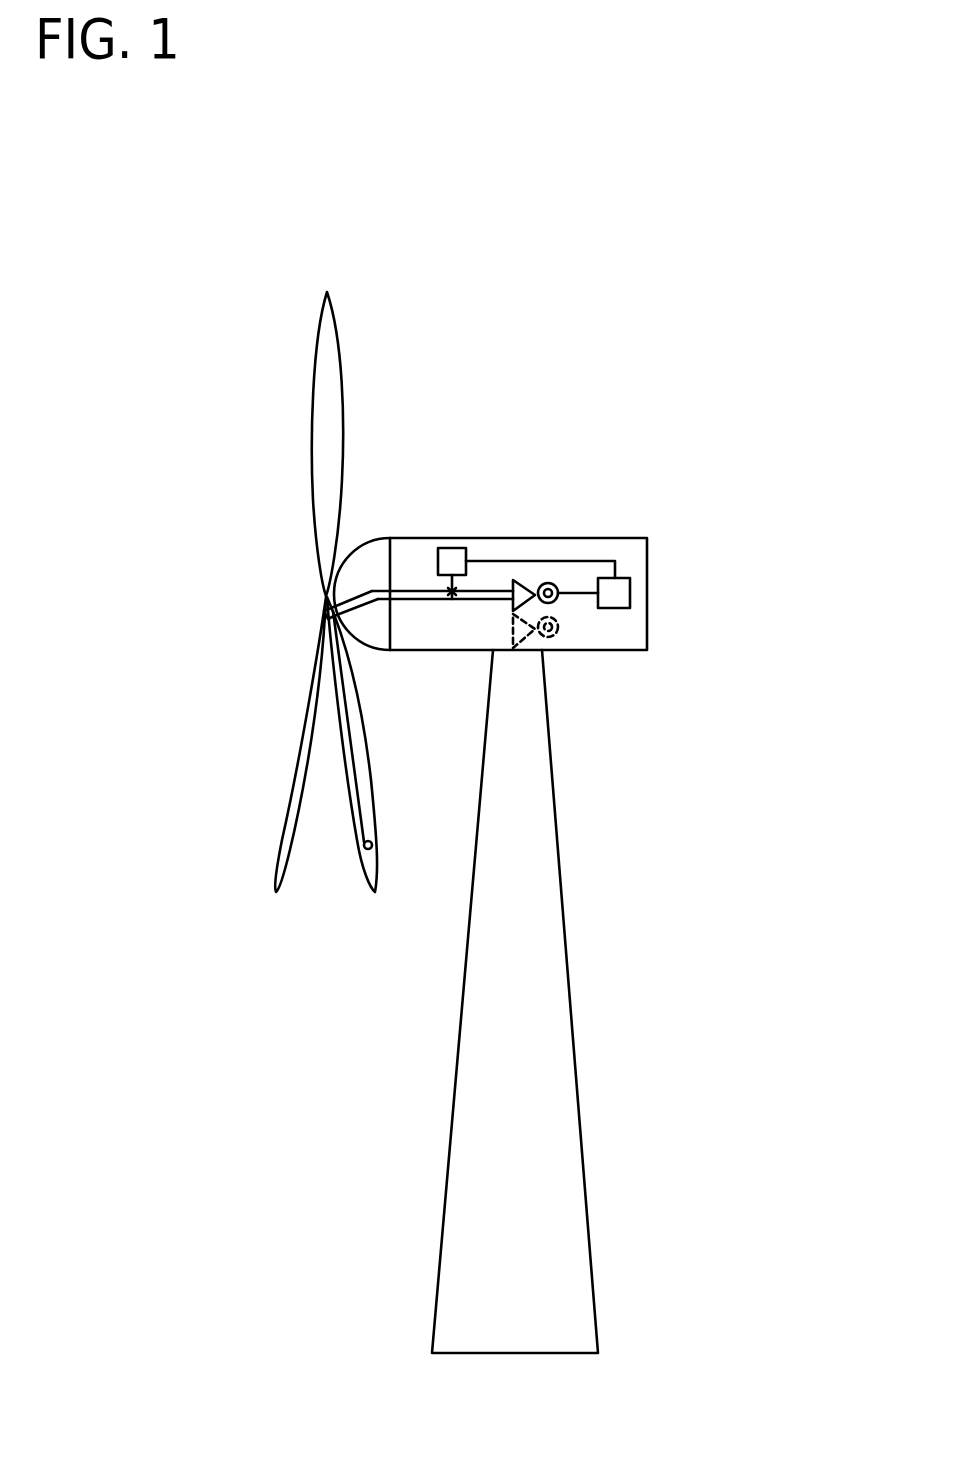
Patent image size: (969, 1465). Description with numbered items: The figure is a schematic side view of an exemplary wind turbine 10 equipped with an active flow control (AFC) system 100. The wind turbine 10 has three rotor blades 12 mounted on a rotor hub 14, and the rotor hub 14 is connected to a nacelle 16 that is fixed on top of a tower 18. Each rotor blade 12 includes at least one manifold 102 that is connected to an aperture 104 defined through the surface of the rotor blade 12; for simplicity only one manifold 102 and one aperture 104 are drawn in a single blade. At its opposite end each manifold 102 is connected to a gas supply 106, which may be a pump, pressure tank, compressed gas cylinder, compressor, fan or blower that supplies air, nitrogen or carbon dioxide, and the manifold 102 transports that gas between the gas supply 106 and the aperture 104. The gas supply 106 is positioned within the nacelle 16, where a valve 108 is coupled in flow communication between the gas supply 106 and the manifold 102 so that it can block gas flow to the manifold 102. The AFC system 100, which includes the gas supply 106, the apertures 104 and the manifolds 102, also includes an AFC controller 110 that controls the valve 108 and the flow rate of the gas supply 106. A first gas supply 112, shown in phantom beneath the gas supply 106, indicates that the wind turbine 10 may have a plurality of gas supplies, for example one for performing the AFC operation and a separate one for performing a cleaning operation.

The wind turbine 10 is at (650, 352).
The rotor blade 12 is at (310, 477).
The rotor hub 14 is at (366, 538).
The nacelle 16 is at (647, 595).
The tower 18 is at (567, 970).
The AFC system 100 is at (405, 628).
The manifold 102 is at (350, 808).
The aperture 104 is at (372, 849).
The gas supply 106 is at (552, 583).
The valve 108 is at (452, 548).
The AFC controller 110 is at (627, 578).
The first gas supply 112 is at (548, 650).